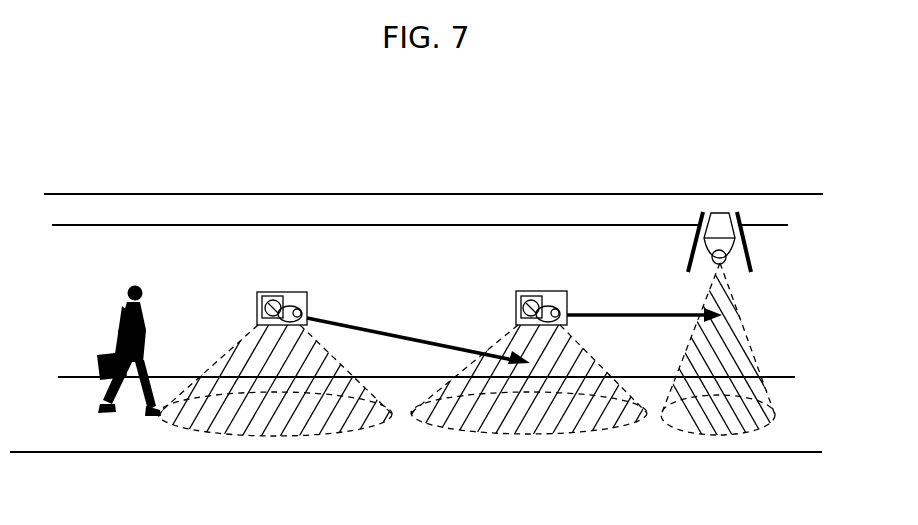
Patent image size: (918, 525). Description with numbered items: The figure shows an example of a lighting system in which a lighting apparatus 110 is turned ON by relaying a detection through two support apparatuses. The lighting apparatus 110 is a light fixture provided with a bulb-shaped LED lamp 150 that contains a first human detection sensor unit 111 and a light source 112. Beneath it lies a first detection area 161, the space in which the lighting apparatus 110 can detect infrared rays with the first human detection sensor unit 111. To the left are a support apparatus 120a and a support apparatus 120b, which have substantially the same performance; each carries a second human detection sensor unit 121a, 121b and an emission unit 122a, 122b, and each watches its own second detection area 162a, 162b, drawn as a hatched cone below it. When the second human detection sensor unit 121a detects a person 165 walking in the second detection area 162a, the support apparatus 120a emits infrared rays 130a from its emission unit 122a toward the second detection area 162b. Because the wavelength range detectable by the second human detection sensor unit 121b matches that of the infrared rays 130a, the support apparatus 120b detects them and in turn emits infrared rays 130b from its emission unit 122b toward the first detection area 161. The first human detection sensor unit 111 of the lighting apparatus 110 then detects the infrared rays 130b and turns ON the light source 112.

The person 165 is at (118, 318).
The support apparatus 120a is at (303, 283).
The second human detection sensor unit 121a is at (257, 300).
The emission unit 122a is at (307, 306).
The support apparatus 120b is at (561, 283).
The second human detection sensor unit 121b is at (516, 298).
The emission unit 122b is at (567, 301).
The infrared rays 130a is at (402, 336).
The infrared rays 130b is at (628, 318).
The lighting apparatus 110 is at (761, 227).
The bulb-shaped LED lamp 150 is at (740, 203).
The light source 112 is at (719, 235).
The first human detection sensor unit 111 is at (726, 260).
The first detection area 161 is at (738, 362).
The second detection area 162a is at (235, 422).
The second detection area 162b is at (500, 420).